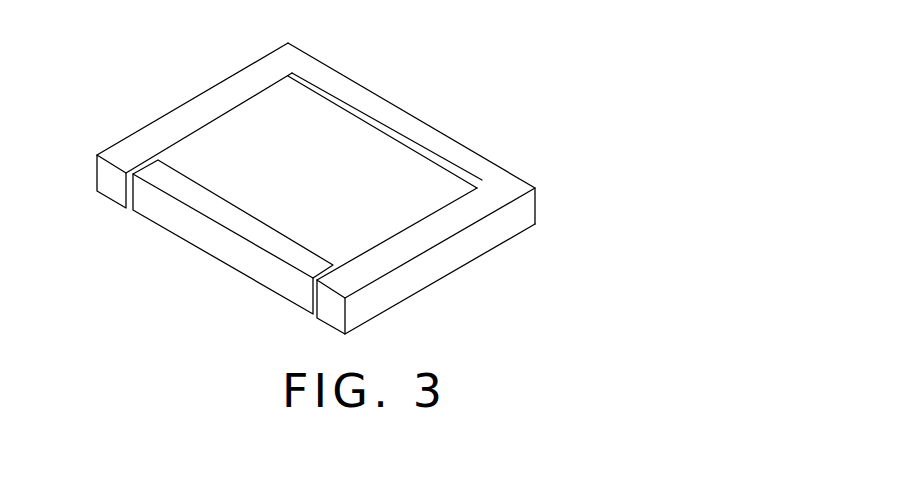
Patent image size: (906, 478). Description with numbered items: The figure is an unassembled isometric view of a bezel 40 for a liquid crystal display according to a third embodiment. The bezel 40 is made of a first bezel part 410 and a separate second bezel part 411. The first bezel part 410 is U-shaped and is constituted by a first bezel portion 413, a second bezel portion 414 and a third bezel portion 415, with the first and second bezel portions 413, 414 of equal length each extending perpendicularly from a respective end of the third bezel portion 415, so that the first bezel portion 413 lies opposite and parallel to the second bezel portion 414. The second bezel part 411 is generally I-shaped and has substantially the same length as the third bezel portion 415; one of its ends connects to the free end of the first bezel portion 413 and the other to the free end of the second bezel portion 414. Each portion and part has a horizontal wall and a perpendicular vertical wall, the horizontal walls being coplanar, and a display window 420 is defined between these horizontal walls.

The bezel 40 is at (329, 33).
The first bezel part 410 is at (475, 142).
The second bezel part 411 is at (203, 233).
The first bezel portion 413 is at (206, 108).
The second bezel portion 414 is at (438, 227).
The third bezel portion 415 is at (395, 117).
The display window 420 is at (320, 117).